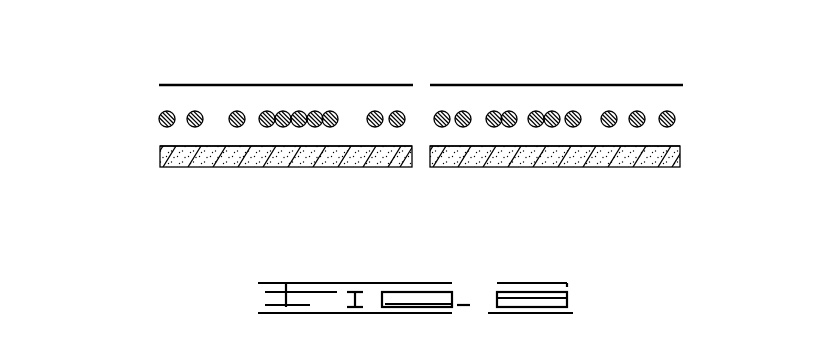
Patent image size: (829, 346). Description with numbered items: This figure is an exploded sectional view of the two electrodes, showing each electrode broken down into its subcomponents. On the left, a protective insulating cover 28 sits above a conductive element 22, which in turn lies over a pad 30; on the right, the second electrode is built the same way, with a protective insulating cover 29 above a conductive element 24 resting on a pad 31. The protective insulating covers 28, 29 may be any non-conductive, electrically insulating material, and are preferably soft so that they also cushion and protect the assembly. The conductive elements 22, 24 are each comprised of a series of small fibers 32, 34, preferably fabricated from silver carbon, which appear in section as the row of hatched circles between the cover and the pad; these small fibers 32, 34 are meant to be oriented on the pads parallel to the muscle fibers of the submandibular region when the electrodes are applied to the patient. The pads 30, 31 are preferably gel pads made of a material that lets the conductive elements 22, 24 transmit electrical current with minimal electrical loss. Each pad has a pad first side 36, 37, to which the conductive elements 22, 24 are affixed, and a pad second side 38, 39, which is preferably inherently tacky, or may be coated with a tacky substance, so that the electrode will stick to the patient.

The protective insulating cover 28 is at (260, 84).
The protective insulating cover 29 is at (533, 84).
The conductive element 22 is at (223, 106).
The small fibers 32 is at (161, 113).
The conductive element 24 is at (607, 109).
The small fibers 34 is at (673, 113).
The pad 30 is at (224, 177).
The pad 31 is at (606, 178).
The pad first side 36 is at (187, 146).
The pad first side 37 is at (652, 146).
The pad second side 38 is at (313, 156).
The pad second side 39 is at (641, 157).